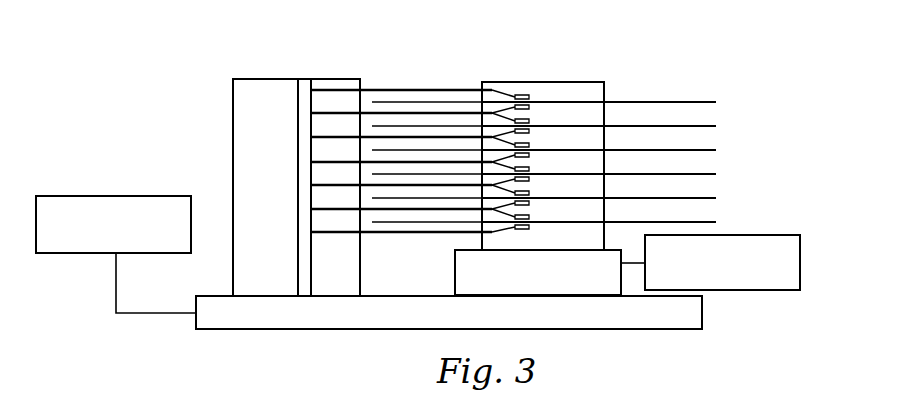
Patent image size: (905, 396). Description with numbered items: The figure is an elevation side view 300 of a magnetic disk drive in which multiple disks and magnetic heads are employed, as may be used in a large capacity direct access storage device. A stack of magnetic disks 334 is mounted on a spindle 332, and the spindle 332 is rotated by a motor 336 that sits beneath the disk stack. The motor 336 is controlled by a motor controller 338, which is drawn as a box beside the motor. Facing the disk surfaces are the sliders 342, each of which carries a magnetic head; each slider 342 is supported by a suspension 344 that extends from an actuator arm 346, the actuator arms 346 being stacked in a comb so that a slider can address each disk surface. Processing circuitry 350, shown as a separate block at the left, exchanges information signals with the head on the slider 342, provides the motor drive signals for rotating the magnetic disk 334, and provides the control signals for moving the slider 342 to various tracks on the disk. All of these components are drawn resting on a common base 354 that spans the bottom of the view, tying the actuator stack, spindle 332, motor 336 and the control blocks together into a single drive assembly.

The side view 300 is at (693, 50).
The spindle 332 is at (590, 80).
The magnetic disk 334 is at (705, 102).
The motor 336 is at (590, 285).
The motor controller 338 is at (772, 292).
The slider 342 is at (530, 100).
The suspension 344 is at (498, 97).
The actuator arm 346 is at (429, 97).
The processing circuitry 350 is at (75, 194).
The base 354 is at (402, 332).